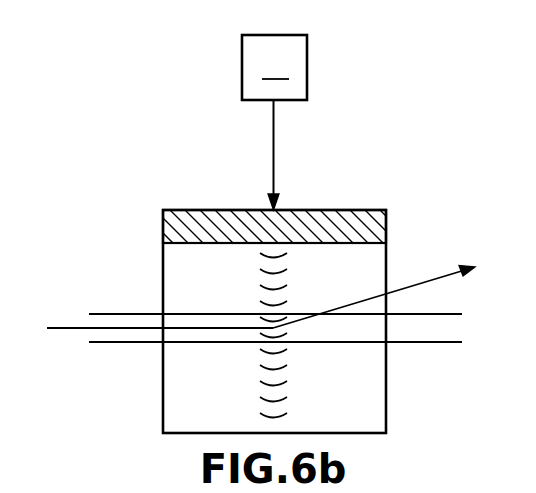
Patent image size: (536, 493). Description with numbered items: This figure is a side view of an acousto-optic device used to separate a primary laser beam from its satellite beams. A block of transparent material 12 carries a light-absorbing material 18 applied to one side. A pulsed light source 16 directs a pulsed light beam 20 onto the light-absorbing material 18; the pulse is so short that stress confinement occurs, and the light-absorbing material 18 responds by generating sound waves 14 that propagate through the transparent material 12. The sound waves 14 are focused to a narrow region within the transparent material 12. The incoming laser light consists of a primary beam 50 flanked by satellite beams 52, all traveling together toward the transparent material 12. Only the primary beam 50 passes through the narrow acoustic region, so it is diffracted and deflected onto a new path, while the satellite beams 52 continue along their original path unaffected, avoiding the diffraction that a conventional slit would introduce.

The transparent material 12 is at (388, 421).
The sound waves 14 is at (262, 279).
The pulsed light source 16 is at (274, 67).
The light-absorbing material 18 is at (163, 225).
The pulsed light beam 20 is at (272, 140).
The primary beam 50 is at (68, 326).
The satellite beams 52 is at (132, 312).